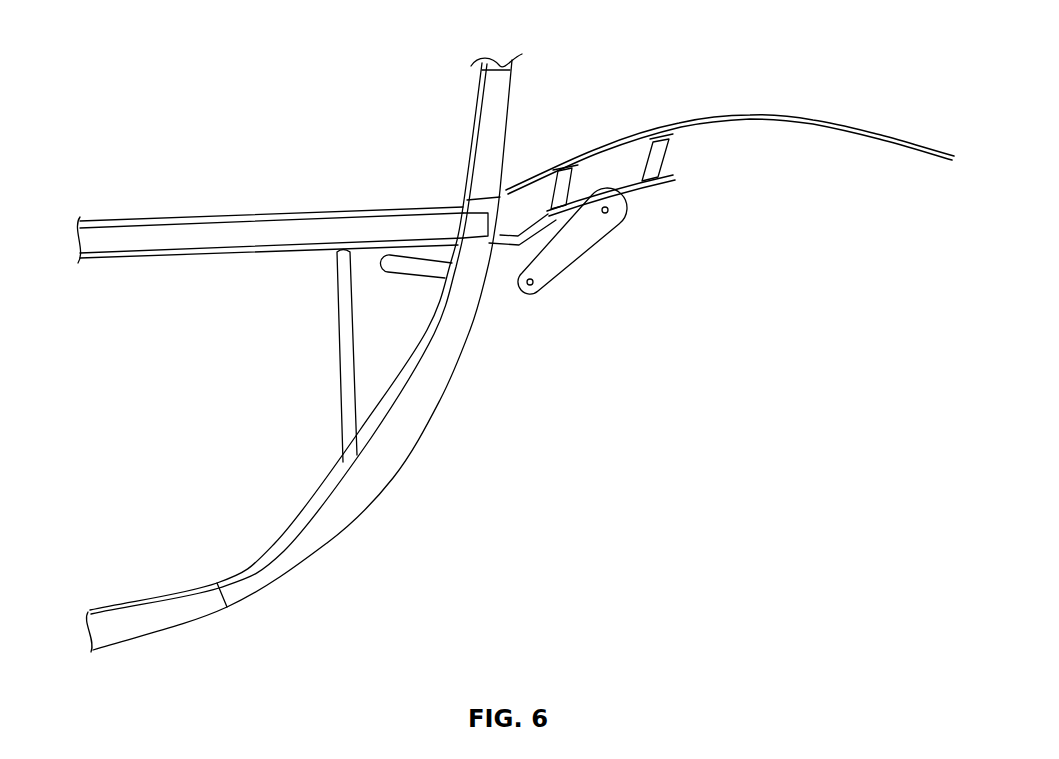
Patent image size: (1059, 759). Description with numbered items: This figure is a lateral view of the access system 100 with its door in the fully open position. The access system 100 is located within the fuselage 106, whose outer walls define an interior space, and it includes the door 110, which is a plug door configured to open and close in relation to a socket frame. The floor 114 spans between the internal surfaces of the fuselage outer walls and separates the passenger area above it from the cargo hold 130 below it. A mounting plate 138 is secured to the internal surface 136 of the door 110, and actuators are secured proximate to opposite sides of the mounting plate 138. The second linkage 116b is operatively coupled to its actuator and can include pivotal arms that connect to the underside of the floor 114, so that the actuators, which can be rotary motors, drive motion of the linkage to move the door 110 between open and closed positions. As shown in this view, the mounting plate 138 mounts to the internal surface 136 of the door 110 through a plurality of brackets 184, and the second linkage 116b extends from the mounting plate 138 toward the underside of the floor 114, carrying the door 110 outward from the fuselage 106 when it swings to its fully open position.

The access system 100 is at (554, 369).
The fuselage 106 is at (323, 541).
The door 110 is at (750, 117).
The floor 114 is at (263, 215).
The second linkage 116b is at (583, 256).
The cargo hold 130 is at (82, 500).
The internal surface 136 is at (705, 127).
The mounting plate 138 is at (635, 178).
The brackets 184 is at (553, 184).